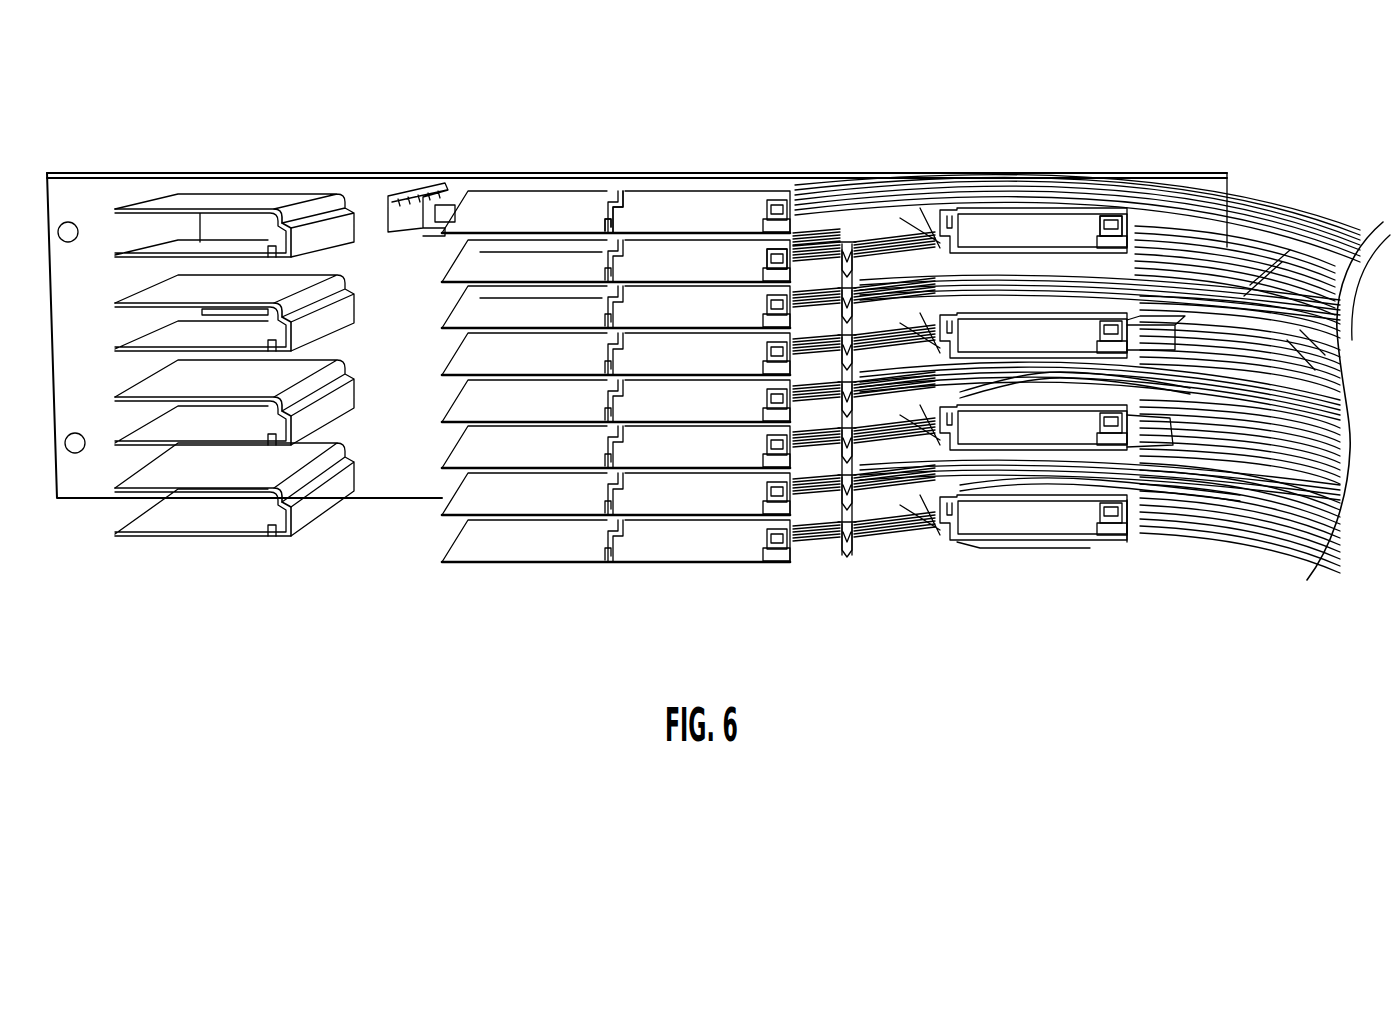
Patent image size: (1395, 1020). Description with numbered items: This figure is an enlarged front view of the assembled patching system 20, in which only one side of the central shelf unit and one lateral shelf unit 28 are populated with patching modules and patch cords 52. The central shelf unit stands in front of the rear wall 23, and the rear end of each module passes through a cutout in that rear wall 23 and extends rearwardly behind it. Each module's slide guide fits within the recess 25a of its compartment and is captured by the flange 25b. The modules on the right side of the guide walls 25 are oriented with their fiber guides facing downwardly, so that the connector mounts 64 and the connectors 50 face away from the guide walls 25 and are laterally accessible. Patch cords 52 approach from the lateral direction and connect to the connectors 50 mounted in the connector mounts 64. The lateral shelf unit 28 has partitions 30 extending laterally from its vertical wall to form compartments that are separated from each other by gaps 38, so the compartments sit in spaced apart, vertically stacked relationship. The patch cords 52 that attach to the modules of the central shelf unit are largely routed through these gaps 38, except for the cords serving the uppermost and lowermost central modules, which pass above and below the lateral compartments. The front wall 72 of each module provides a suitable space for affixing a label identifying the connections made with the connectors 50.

The patching system 20 is at (675, 147).
The rear wall 23 is at (616, 374).
The central divider (guide walls) 25 is at (612, 205).
The recess 25a is at (608, 190).
The flange 25b is at (635, 196).
The connector 50 is at (770, 248).
The connector mount 64 is at (825, 232).
The patch cord 52 is at (918, 230).
The partition 30 is at (1205, 258).
The lateral shelf unit 28 is at (959, 458).
The front wall 72 is at (1080, 522).
The gap 38 is at (1056, 398).